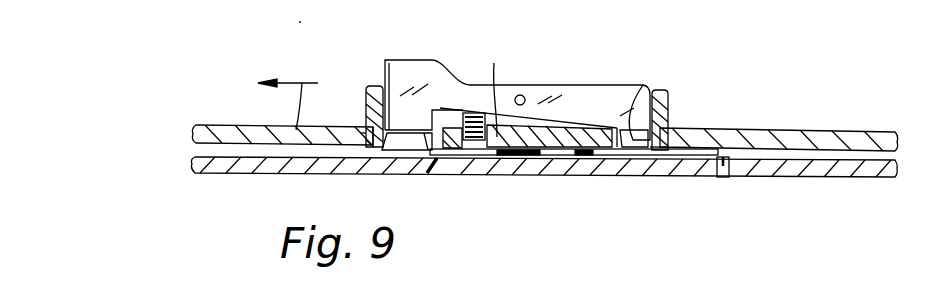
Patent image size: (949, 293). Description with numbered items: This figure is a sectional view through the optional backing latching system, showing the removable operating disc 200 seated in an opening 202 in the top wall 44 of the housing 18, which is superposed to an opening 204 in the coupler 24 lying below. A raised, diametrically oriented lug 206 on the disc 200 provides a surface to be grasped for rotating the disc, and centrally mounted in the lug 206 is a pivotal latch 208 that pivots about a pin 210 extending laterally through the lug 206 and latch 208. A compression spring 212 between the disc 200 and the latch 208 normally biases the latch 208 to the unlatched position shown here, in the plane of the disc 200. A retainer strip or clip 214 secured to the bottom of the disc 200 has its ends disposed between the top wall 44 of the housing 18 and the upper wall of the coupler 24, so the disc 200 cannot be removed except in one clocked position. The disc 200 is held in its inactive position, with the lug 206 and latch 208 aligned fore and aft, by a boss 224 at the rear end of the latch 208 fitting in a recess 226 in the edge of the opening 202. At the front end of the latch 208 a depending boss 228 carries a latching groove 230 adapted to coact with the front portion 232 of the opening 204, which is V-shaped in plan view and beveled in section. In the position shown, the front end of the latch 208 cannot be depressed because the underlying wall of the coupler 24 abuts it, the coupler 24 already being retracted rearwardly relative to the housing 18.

The housing 18 is at (212, 126).
The coupler 24 is at (197, 173).
The top wall 44 is at (863, 133).
The removable operating disc 200 is at (566, 146).
The opening 202 is at (650, 148).
The opening 204 is at (722, 160).
The lug 206 is at (370, 87).
The pivotal latch 208 is at (600, 100).
The pin 210 is at (527, 94).
The compression spring 212 is at (482, 140).
The retainer strip or clip 214 is at (503, 89).
The boss 224 is at (650, 85).
The recess 226 is at (622, 150).
The boss 228 is at (410, 70).
The latching groove 230 is at (364, 135).
The front portion 232 is at (432, 165).